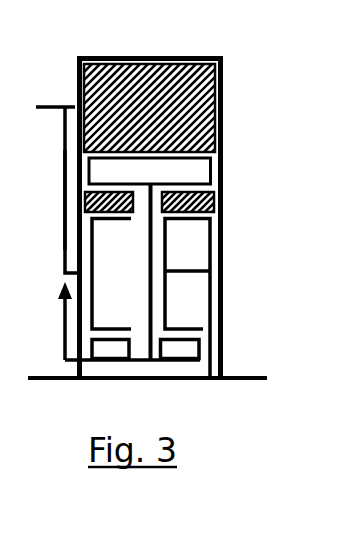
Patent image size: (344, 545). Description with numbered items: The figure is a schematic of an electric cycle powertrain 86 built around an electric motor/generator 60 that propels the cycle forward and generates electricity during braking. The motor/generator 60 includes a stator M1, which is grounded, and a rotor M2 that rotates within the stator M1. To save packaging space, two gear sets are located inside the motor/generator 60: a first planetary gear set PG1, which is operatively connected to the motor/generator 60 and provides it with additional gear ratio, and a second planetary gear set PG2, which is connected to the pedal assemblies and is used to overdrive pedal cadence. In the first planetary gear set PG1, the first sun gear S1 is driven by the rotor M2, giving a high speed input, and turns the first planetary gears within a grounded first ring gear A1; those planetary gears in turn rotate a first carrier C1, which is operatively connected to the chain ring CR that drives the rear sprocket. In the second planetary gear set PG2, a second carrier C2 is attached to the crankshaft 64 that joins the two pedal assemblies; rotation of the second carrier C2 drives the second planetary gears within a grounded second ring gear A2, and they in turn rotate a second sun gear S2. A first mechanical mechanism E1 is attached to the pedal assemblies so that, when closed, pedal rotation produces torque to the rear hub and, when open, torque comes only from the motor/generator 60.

The electric motor/generator 60 is at (188, 217).
The electronic cycle powertrain 86 is at (238, 299).
The crankshaft 64 is at (72, 381).
The stator M1 is at (211, 84).
The rotor M2 is at (209, 160).
The first ring gear A1 is at (236, 217).
The second ring gear A2 is at (50, 200).
The chain ring CR is at (58, 177).
The first planetary gear set PG1 is at (106, 217).
The second planetary gear set PG2 is at (187, 217).
The first carrier C1 is at (111, 274).
The second carrier C2 is at (225, 293).
The first sun gear S1 is at (110, 349).
The second sun gear S2 is at (180, 349).
The first mechanical mechanism E1 is at (118, 321).